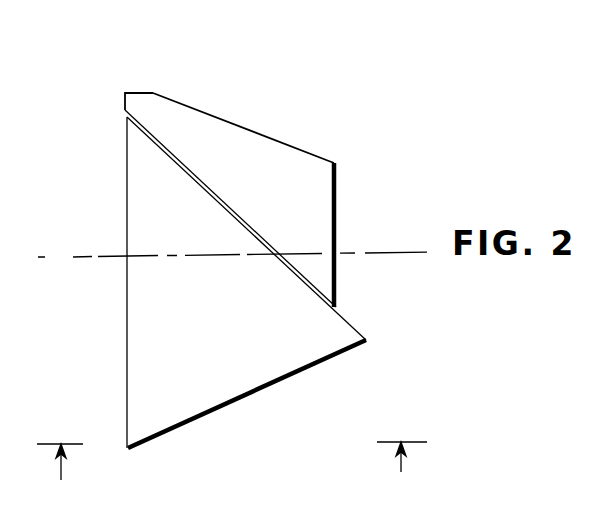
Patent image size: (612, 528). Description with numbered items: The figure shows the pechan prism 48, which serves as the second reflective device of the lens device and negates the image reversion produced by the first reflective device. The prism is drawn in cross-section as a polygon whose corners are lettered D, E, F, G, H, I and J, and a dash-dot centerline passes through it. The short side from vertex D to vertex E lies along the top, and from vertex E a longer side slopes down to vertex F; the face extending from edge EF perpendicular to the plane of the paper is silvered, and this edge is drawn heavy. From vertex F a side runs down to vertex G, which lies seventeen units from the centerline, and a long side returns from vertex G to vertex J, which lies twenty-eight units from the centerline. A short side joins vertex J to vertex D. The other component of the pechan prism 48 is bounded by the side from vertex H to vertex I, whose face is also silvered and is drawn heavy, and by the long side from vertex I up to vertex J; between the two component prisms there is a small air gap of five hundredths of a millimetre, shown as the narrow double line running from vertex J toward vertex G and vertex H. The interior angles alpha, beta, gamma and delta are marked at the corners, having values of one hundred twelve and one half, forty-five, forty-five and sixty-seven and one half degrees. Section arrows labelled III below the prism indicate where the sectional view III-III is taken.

The pechan prism 48 is at (250, 267).
The vertex D is at (127, 87).
The vertex E is at (242, 114).
The vertex F is at (343, 227).
The vertex G is at (244, 213).
The vertex H is at (257, 235).
The vertex I is at (239, 404).
The vertex J is at (113, 275).
The section line III- III is at (27, 490).